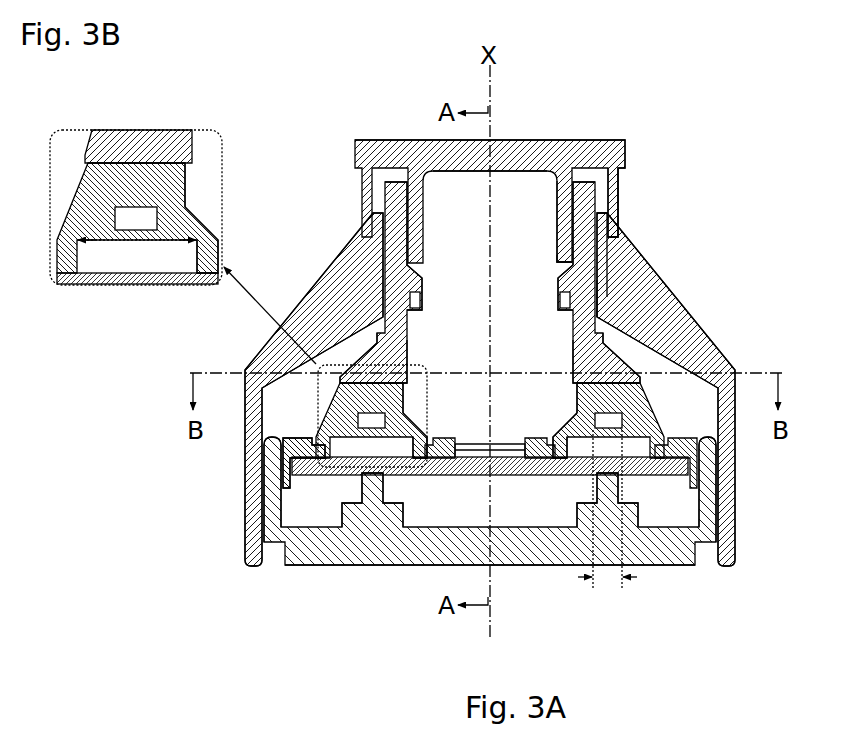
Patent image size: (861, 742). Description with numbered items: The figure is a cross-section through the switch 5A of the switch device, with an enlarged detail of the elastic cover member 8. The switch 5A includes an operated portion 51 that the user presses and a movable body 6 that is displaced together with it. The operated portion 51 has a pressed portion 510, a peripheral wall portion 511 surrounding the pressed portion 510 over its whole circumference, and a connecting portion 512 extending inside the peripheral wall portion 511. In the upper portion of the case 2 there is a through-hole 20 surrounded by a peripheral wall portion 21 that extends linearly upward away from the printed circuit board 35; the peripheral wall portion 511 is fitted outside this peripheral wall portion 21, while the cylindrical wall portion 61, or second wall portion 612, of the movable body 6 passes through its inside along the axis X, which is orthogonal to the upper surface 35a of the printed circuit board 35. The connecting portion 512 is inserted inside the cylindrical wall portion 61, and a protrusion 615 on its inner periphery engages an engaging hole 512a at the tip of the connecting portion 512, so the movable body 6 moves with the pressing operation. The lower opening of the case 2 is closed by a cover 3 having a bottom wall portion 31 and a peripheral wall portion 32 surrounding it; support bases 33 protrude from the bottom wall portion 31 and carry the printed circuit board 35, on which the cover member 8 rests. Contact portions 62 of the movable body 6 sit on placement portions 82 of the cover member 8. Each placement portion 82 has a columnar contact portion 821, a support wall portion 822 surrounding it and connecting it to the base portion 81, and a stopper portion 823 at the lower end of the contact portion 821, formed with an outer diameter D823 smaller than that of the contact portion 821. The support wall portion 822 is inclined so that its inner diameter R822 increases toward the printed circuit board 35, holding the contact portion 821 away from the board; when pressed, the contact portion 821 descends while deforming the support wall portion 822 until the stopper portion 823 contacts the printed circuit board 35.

In FIG. 3A, the case 2 is at (728, 377).
In FIG. 3A, the cover 3 is at (703, 566).
In FIG. 3A, the switch 5A is at (305, 143).
In FIG. 3A, the movable body 6 is at (355, 356).
In FIG. 3A, the cover member 8 is at (291, 435).
In FIG. 3A, the through-hole 20 is at (607, 298).
In FIG. 3A, the peripheral wall portion 21 is at (606, 254).
In FIG. 3A, the bottom wall portion 31 is at (393, 568).
In FIG. 3A, the peripheral wall portion 32 is at (722, 498).
In FIG. 3A, the support base 33 is at (378, 488).
In FIG. 3B, the printed circuit board 35 is at (92, 284).
In FIG. 3A, the printed circuit board 35 is at (520, 476).
In FIG. 3A, the upper surface 35a is at (478, 452).
In FIG. 3A, the operated portion 51 is at (622, 138).
In FIG. 3A, the cylindrical wall portion 61 is at (410, 235).
In FIG. 3B, the contact portion 62 is at (143, 145).
In FIG. 3A, the contact portion 62 is at (382, 366).
In FIG. 3A, the base portion 81 is at (300, 440).
In FIG. 3B, the placement portion 82 is at (78, 173).
In FIG. 3A, the placement portion 82 is at (575, 408).
In FIG. 3A, the pressed portion 510 is at (557, 168).
In FIG. 3A, the peripheral wall portion 511 is at (618, 196).
In FIG. 3A, the connecting portion 512 is at (555, 200).
In FIG. 3A, the engaging hole 512a is at (558, 266).
In FIG. 3A, the second wall portion 612 is at (557, 266).
In FIG. 3A, the protrusion 615 is at (557, 292).
In FIG. 3B, the contact portion 821 is at (178, 182).
In FIG. 3A, the contact portion 821 is at (404, 392).
In FIG. 3B, the support wall portion 822 is at (197, 218).
In FIG. 3A, the support wall portion 822 is at (420, 433).
In FIG. 3B, the stopper portion 823 is at (134, 220).
In FIG. 3A, the stopper portion 823 is at (372, 424).
In FIG. 3B, the inner diameter R822 is at (137, 256).
In FIG. 3A, the outer diameter D823 is at (615, 525).